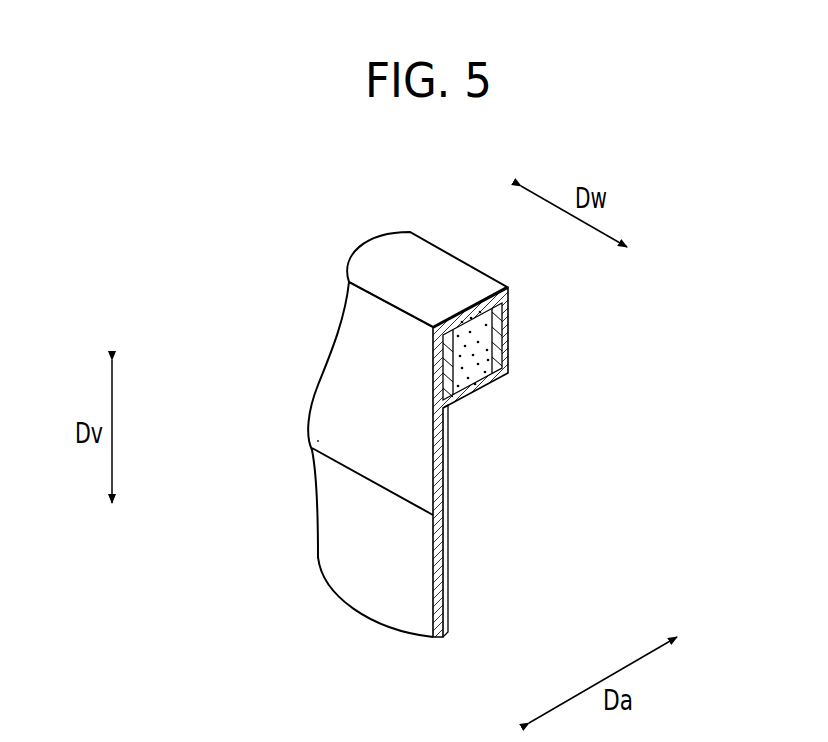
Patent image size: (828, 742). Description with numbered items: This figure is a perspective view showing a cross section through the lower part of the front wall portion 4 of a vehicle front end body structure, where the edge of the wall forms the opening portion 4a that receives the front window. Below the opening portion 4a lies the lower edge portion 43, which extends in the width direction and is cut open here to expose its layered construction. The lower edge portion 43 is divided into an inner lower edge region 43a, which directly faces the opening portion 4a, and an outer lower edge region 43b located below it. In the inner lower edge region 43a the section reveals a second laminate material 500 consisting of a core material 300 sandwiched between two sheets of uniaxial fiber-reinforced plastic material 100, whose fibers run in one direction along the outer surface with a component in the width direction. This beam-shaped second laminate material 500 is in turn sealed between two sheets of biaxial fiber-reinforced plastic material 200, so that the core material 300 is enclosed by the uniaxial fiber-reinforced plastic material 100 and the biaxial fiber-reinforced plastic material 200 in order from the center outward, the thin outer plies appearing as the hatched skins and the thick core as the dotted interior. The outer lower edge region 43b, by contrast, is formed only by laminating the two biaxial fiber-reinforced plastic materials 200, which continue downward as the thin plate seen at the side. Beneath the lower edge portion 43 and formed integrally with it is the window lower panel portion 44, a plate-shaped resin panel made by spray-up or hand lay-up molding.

The front wall portion 4 is at (338, 405).
The opening portion 4a is at (452, 280).
The lower edge portion 43 is at (225, 318).
The inner lower edge region 43a is at (423, 413).
The outer lower edge region 43b is at (423, 510).
The window lower panel portion 44 is at (350, 527).
The uniaxial fiber-reinforced plastic material 100 is at (493, 366).
The biaxial fiber-reinforced plastic material 200 is at (437, 597).
The core material 300 is at (472, 376).
The second laminate material 500 is at (553, 386).